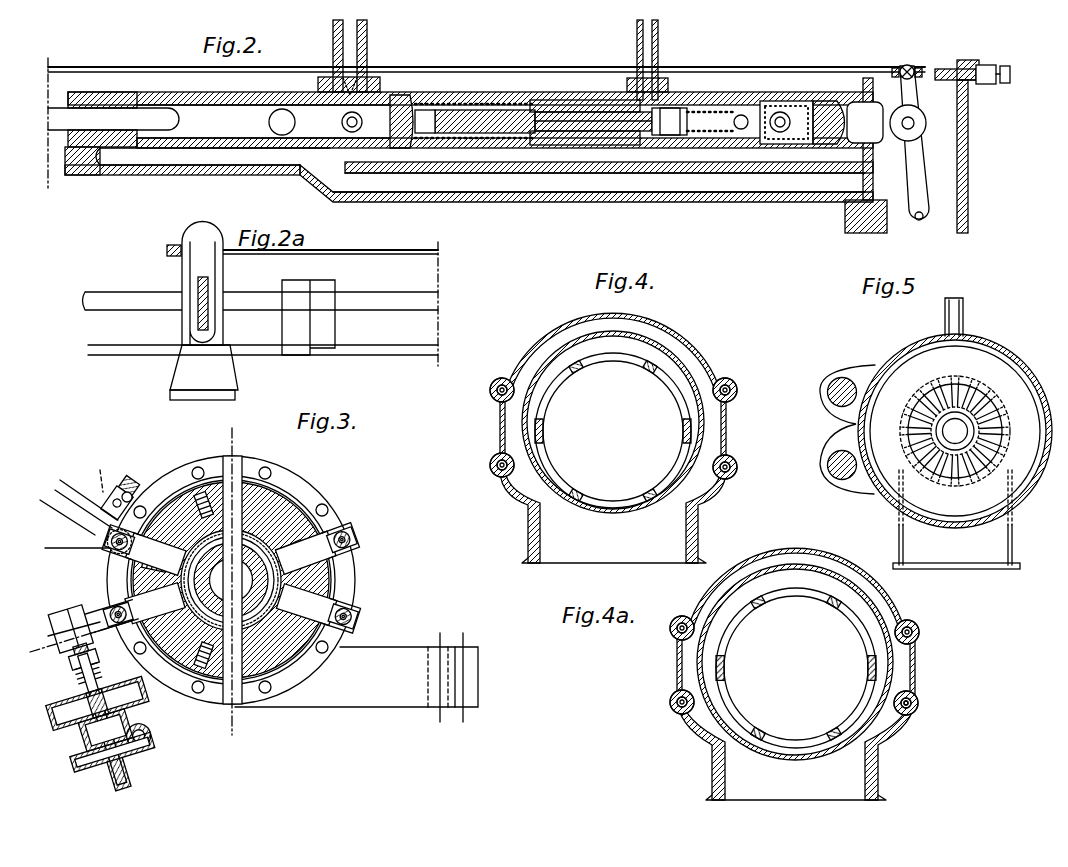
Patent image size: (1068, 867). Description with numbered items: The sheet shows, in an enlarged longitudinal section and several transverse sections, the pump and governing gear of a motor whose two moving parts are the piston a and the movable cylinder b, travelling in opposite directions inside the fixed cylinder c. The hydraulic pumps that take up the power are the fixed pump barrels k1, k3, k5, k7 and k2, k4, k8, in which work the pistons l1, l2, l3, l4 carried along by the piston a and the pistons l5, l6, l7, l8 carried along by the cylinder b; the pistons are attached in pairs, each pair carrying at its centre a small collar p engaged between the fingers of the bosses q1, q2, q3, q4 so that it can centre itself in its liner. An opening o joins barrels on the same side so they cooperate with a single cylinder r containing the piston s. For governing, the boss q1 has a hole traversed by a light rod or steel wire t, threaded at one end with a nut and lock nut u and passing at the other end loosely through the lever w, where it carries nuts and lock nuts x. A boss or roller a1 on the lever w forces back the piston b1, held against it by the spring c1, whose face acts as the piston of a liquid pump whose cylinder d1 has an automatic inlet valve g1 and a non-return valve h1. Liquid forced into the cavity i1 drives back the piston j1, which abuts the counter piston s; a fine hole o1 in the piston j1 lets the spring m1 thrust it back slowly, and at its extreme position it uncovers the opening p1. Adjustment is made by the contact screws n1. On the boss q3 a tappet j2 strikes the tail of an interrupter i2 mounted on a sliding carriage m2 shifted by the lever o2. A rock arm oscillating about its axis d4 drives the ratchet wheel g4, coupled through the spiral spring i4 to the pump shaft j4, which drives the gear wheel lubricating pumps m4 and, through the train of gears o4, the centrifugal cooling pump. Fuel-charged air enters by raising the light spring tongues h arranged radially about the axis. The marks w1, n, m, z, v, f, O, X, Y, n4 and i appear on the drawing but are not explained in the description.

In FIG. 2, the rod or steel wire t is at (486, 58).
In FIG. 2A, the rod or steel wire t is at (392, 252).
In FIG. 3, the rod or steel wire t is at (104, 660).
In FIG. 2, the fixed cylinder (pump barrel) k1 is at (195, 98).
In FIG. 4, the fixed cylinder (pump barrel) k1 is at (492, 475).
In FIG. 2, the fixed cylinder c is at (218, 170).
In FIG. 3, the fixed cylinder c is at (255, 460).
In FIG. 4, the fixed cylinder c is at (683, 348).
In FIG. 5, the fixed cylinder c is at (908, 356).
In FIG. 4A, the fixed cylinder c is at (892, 608).
In FIG. 2, the inlet pipe w1 is at (446, 56).
In FIG. 2, the nozzle n is at (349, 88).
In FIG. 2, the opening p1 is at (650, 60).
In FIG. 2, the pump piston l1 is at (62, 118).
In FIG. 2A, the pump piston l1 is at (353, 305).
In FIG. 3, the pump piston l1 is at (108, 614).
In FIG. 4, the pump piston l1 is at (490, 462).
In FIG. 2, the opening o is at (270, 122).
In FIG. 2, the pin m is at (342, 122).
In FIG. 2, the piston (counter piston) s is at (404, 97).
In FIG. 2, the cylinder r is at (446, 96).
In FIG. 2, the spring m1 is at (476, 106).
In FIG. 2, the fine hole o1 is at (569, 112).
In FIG. 2, the piston j1 is at (607, 110).
In FIG. 2, the cavity i1 is at (669, 118).
In FIG. 2, the automatic non-return valve h1 is at (739, 117).
In FIG. 2, the pump cylinder d1 is at (796, 95).
In FIG. 5, the pump cylinder d1 is at (836, 408).
In FIG. 2, the automatic inlet valve g1 is at (778, 114).
In FIG. 2, the spring c1 is at (822, 104).
In FIG. 2, the piston b1 is at (865, 122).
In FIG. 5, the piston b1 is at (848, 378).
In FIG. 2, the lever w is at (956, 160).
In FIG. 2, the adjustable contact screws n1 is at (945, 67).
In FIG. 2, the lever z is at (918, 153).
In FIG. 2, the nuts and lock nuts x is at (905, 63).
In FIG. 2, the nut v is at (898, 78).
In FIG. 2, the boss or roller a1 is at (902, 135).
In FIG. 2A, the pump piston l2 is at (96, 292).
In FIG. 4A, the pump piston l2 is at (670, 702).
In FIG. 2A, the boss q1 is at (222, 268).
In FIG. 3, the boss q1 is at (100, 606).
In FIG. 2A, the small collar p is at (200, 300).
In FIG. 2A, the nut and lock nut u is at (167, 250).
In FIG. 3, the piston a is at (272, 520).
In FIG. 3, the movable cylinder b is at (187, 485).
In FIG. 4, the movable cylinder b is at (579, 366).
In FIG. 4A, the movable cylinder b is at (752, 600).
In FIG. 3, the hub f is at (231, 580).
In FIG. 3, the center O is at (231, 580).
In FIG. 3, the axis X is at (235, 582).
In FIG. 3, the axis Y is at (95, 633).
In FIG. 3, the pump piston l3 is at (352, 540).
In FIG. 4, the pump piston l3 is at (727, 378).
In FIG. 3, the boss q2 is at (345, 553).
In FIG. 3, the pump piston l7 is at (352, 618).
In FIG. 4, the pump piston l7 is at (727, 478).
In FIG. 3, the boss q4 is at (352, 606).
In FIG. 3, the pump piston l5 is at (110, 538).
In FIG. 4, the pump piston l5 is at (490, 392).
In FIG. 4A, the pump piston l5 is at (910, 717).
In FIG. 3, the pump piston l6 is at (95, 548).
In FIG. 4A, the pump piston l6 is at (676, 618).
In FIG. 3, the boss q3 is at (115, 552).
In FIG. 3, the interrupter i2 is at (110, 500).
In FIG. 3, the tappet j2 is at (76, 498).
In FIG. 3, the small carriage m2 is at (115, 475).
In FIG. 3, the lever o2 is at (132, 492).
In FIG. 3, the pump piston l4 is at (18, 651).
In FIG. 4A, the pump piston l4 is at (916, 624).
In FIG. 3, the axis of rock arm d4 is at (70, 666).
In FIG. 3, the ratchet wheel g4 is at (74, 686).
In FIG. 3, the spiral spring i4 is at (87, 724).
In FIG. 3, the lubrication pumps m4 is at (92, 716).
In FIG. 3, the pump shaft j4 is at (135, 730).
In FIG. 3, the train of gears o4 is at (158, 753).
In FIG. 3, the valve seat n4 is at (95, 773).
In FIG. 4, the liner ring i is at (612, 503).
In FIG. 4A, the liner ring i is at (782, 742).
In FIG. 4, the fixed cylinder (pump barrel) k5 is at (502, 378).
In FIG. 4A, the fixed cylinder (pump barrel) k5 is at (670, 636).
In FIG. 4, the fixed cylinder (pump barrel) k3 is at (735, 387).
In FIG. 4, the fixed cylinder (pump barrel) k7 is at (737, 470).
In FIG. 5, the spring tongues h is at (985, 420).
In FIG. 4A, the fixed cylinder (pump barrel) k2 is at (677, 714).
In FIG. 4A, the fixed cylinder (pump barrel) k4 is at (921, 634).
In FIG. 4A, the fixed cylinder (pump barrel) k8 is at (921, 704).
In FIG. 4A, the pump piston l8 is at (906, 703).